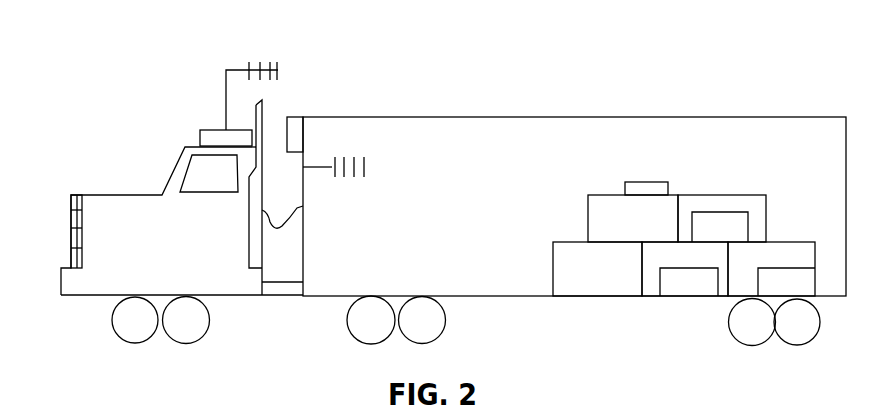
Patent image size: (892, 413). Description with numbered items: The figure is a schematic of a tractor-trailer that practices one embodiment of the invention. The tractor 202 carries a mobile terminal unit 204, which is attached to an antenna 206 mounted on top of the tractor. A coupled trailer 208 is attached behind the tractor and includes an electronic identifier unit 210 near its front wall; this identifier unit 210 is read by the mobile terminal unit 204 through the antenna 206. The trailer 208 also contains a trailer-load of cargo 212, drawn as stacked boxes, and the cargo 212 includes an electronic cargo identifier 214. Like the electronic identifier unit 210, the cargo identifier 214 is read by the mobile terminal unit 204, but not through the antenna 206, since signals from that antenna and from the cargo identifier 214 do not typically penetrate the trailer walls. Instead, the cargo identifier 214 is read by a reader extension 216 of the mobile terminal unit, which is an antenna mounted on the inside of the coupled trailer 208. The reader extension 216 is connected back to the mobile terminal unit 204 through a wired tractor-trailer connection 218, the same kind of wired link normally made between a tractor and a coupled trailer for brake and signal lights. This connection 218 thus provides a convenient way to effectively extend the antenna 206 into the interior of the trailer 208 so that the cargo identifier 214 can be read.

The tractor 202 is at (155, 156).
The mobile terminal unit 204 is at (212, 128).
The antenna 206 is at (240, 68).
The trailer 208 is at (817, 118).
The electronic identifier unit 210 is at (428, 92).
The cargo 212 is at (553, 258).
The electronic cargo identifier 214 is at (657, 181).
The reader extension 216 is at (323, 173).
The wired tractor-trailer connection 218 is at (280, 237).